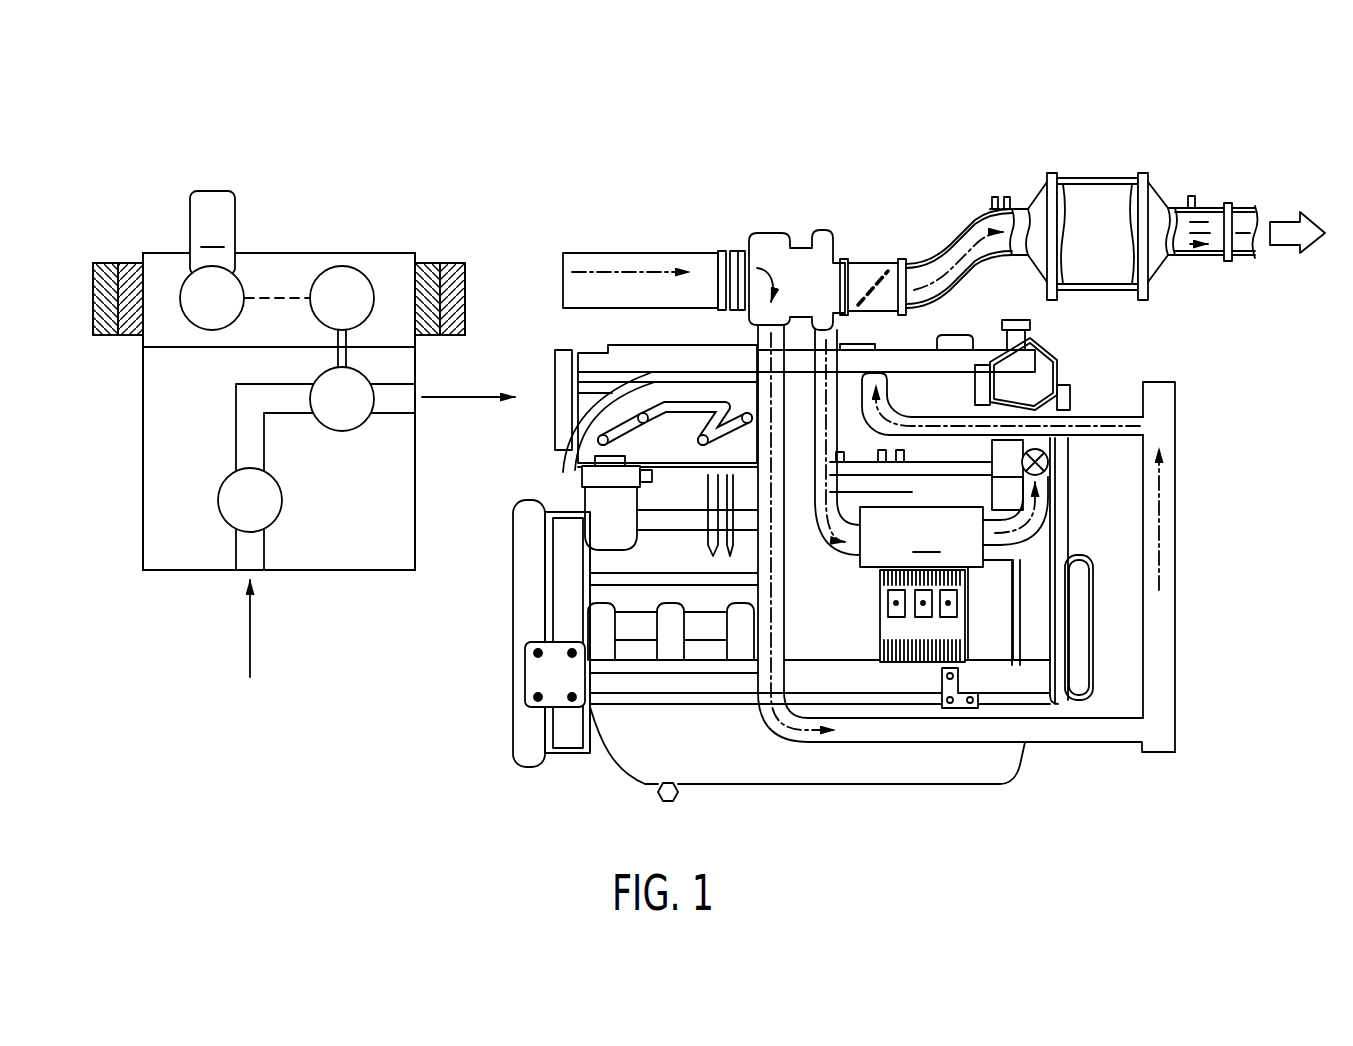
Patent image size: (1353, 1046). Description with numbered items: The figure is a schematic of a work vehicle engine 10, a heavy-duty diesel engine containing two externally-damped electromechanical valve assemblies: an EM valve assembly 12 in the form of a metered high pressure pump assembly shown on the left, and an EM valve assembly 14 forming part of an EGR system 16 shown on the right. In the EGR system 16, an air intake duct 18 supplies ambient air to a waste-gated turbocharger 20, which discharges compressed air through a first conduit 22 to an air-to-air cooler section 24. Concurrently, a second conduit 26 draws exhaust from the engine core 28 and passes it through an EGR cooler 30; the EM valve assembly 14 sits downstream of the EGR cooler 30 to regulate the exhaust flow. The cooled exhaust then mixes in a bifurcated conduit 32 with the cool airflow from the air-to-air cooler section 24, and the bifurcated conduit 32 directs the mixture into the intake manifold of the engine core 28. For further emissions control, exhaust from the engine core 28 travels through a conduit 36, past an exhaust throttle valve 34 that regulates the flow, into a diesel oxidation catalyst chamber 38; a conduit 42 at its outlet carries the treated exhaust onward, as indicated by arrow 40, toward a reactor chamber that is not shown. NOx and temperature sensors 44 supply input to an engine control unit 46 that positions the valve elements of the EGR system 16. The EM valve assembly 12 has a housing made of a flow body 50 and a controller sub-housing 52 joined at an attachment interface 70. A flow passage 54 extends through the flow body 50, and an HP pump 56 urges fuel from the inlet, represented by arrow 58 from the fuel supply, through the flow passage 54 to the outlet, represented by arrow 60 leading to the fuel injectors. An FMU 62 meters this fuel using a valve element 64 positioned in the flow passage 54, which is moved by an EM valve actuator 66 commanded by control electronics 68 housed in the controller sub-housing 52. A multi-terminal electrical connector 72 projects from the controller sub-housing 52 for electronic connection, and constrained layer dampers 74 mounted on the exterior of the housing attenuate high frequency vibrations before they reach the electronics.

The work vehicle engine 10 is at (357, 157).
The EM valve assembly 12 is at (139, 575).
The EM valve assembly 14 is at (1049, 470).
The EGR system 16 is at (1115, 196).
The air intake duct 18 is at (627, 256).
The waste-gated turbocharger 20 is at (808, 248).
The first conduit 22 is at (758, 553).
The air-to-air cooler section 24 is at (1177, 608).
The second conduit 26 is at (845, 551).
The engine core 28 is at (627, 775).
The EGR cooler 30 is at (954, 522).
The bifurcated conduit 32 is at (937, 420).
The exhaust throttle valve 34 is at (868, 263).
The conduit 36 is at (960, 235).
The diesel oxidation catalyst chamber 38 is at (1085, 190).
The arrow 40 is at (1292, 251).
The conduit 42 is at (1213, 208).
The NOx and temperature sensors 44 is at (994, 197).
The engine control unit 46 is at (888, 631).
The flow body 50 is at (397, 553).
The controller sub-housing 52 is at (170, 258).
The flow passage 54 is at (236, 416).
The HP pump 56 is at (224, 486).
The arrow 58 is at (251, 636).
The arrow 60 is at (462, 396).
The FMU 62 is at (400, 251).
The valve element 64 is at (352, 430).
The EM valve actuator 66 is at (316, 278).
The control electronics 68 is at (241, 279).
The attachment interface 70 is at (215, 349).
The multi-terminal electrical connector 72 is at (212, 233).
The constrained layer dampers 74 is at (115, 265).